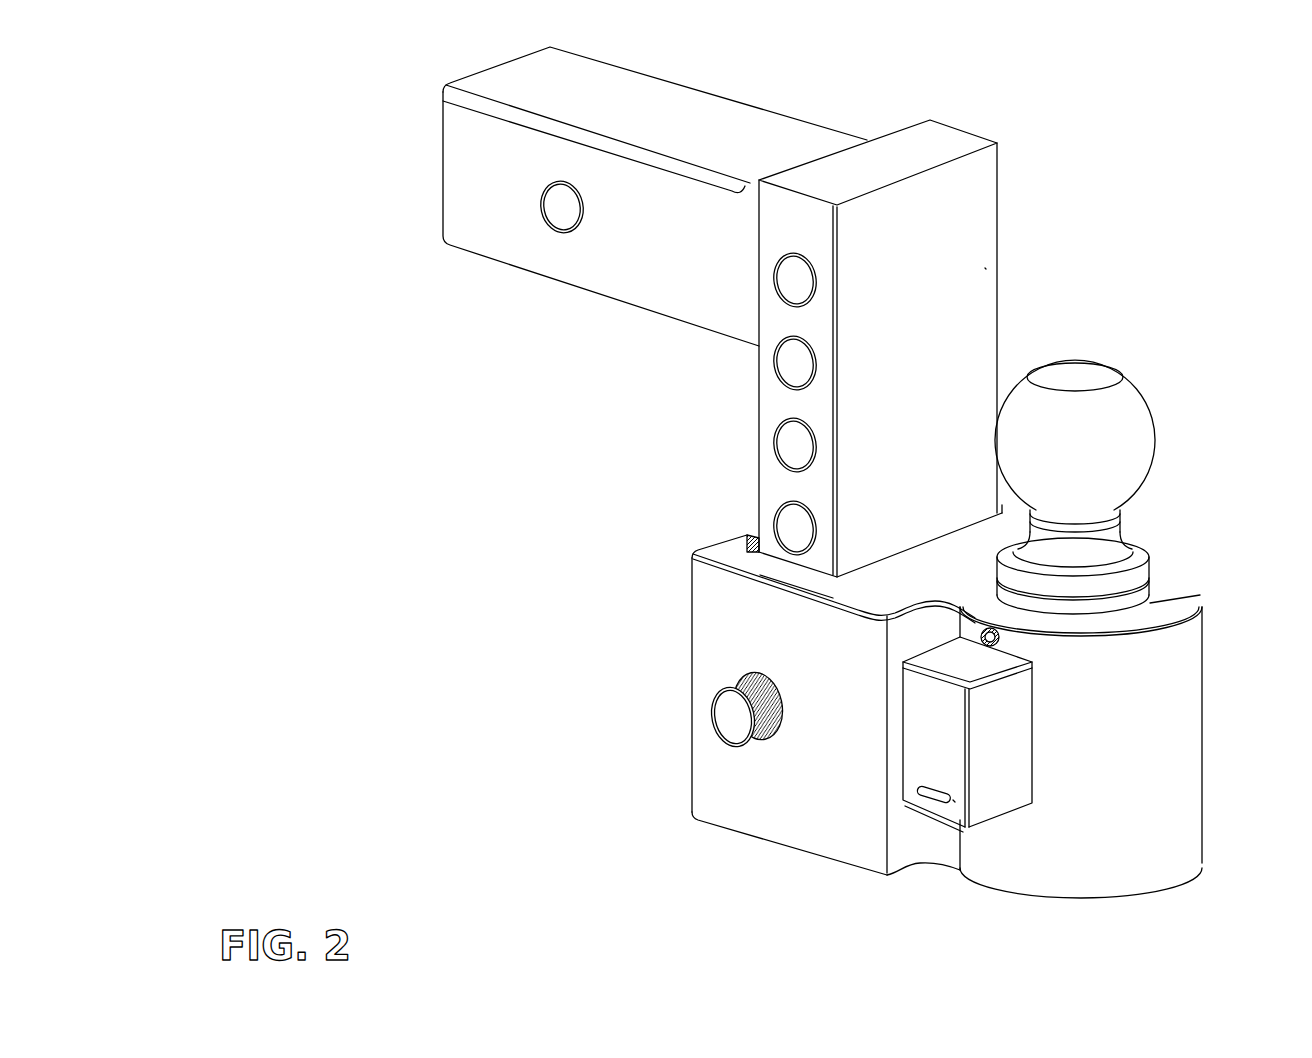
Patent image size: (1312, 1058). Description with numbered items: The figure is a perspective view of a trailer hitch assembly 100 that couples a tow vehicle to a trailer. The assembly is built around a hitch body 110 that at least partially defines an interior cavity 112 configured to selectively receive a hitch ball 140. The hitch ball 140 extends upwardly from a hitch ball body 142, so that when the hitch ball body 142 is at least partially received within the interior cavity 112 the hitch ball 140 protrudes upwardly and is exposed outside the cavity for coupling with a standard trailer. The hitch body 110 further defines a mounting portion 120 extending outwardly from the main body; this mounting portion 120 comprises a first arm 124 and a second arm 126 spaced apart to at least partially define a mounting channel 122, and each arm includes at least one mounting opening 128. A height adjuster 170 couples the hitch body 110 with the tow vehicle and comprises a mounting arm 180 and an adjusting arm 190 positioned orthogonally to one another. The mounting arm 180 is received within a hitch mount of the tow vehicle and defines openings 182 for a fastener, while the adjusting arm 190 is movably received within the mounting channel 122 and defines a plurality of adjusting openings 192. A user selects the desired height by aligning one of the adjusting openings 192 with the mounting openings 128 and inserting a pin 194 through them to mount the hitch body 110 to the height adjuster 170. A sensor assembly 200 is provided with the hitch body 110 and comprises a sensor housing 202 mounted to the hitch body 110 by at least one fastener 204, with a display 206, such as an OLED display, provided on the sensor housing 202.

The trailer hitch assembly 100 is at (1170, 70).
The hitch body 110 is at (1121, 623).
The interior cavity 112 is at (1160, 597).
The mounting portion 120 is at (792, 690).
The mounting channel 122 is at (753, 540).
The first arm 124 is at (768, 566).
The second arm 126 is at (1002, 505).
The mounting opening 128 is at (699, 694).
The hitch ball 140 is at (1160, 445).
The hitch ball body 142 is at (1137, 583).
The height adjuster 170 is at (874, 317).
The mounting arm 180 is at (655, 195).
The openings 182 is at (563, 233).
The adjusting arm 190 is at (985, 268).
The adjusting openings 192 is at (782, 510).
The pin 194 is at (732, 720).
The sensor assembly 200 is at (1062, 790).
The sensor housing 202 is at (910, 770).
The fastener 204 is at (1000, 638).
The display 206 is at (953, 800).